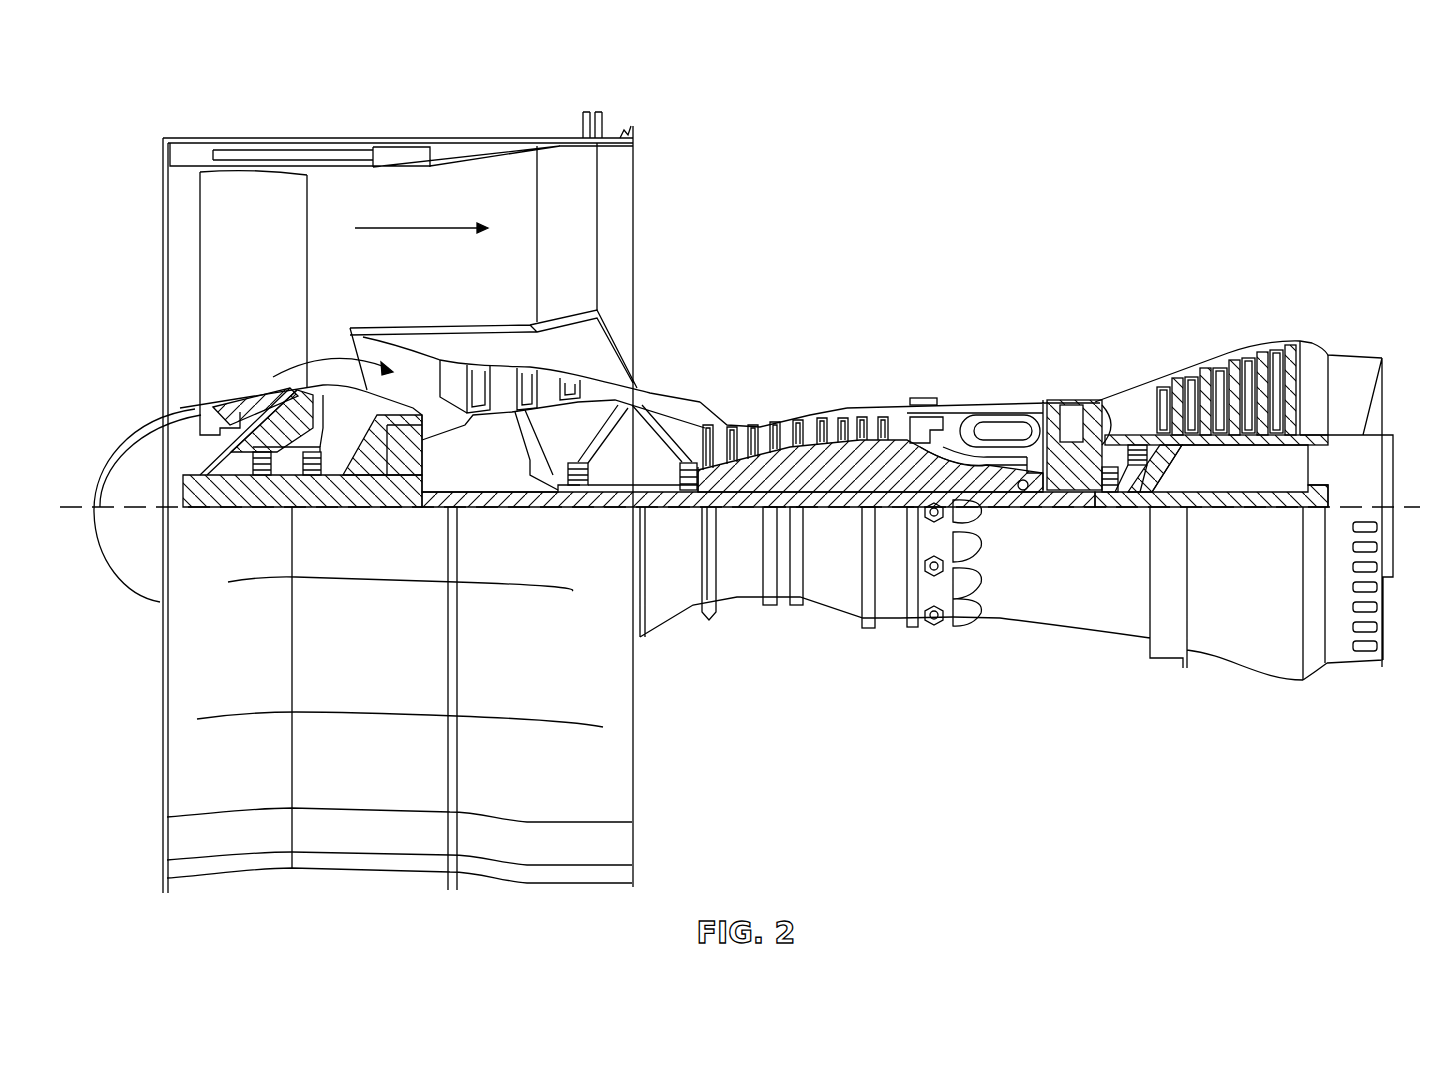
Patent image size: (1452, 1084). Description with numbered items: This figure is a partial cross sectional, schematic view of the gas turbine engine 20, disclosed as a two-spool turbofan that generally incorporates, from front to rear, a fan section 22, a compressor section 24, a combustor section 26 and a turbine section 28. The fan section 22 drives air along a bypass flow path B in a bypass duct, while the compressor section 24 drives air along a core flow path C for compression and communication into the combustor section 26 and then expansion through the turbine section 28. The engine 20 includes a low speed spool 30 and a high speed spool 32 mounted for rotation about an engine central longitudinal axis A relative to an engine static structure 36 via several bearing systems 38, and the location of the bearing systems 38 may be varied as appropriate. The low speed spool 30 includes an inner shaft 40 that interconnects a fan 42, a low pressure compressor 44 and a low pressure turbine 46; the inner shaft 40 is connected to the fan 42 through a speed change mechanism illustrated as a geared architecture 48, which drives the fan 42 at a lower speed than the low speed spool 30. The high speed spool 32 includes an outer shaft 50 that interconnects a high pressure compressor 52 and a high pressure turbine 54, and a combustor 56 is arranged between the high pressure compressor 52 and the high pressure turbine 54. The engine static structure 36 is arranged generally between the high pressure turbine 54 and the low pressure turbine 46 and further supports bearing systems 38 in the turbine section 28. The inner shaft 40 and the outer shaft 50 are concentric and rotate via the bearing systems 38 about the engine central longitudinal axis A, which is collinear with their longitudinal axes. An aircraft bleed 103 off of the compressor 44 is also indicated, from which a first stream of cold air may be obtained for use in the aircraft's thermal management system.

The gas turbine engine 20 is at (1268, 106).
The fan section 22 is at (246, 134).
The compressor section 24 is at (751, 244).
The combustor section 26 is at (986, 244).
The turbine section 28 is at (1186, 244).
The low speed spool 30 is at (849, 514).
The high speed spool 32 is at (905, 455).
The engine static structure 36 is at (899, 626).
The bearing systems 38 is at (262, 472).
The inner shaft 40 is at (655, 510).
The fan 42 is at (236, 273).
The low pressure compressor 44 is at (541, 368).
The low pressure turbine 46 is at (1237, 372).
The geared architecture 48 is at (400, 474).
The outer shaft 50 is at (1027, 491).
The high pressure compressor 52 is at (812, 474).
The high pressure turbine 54 is at (1072, 398).
The combustor 56 is at (990, 428).
The aircraft bleed 103 is at (505, 395).
The engine central longitudinal axis A is at (1406, 507).
The bypass flow path B is at (421, 224).
The core flow path C is at (295, 366).